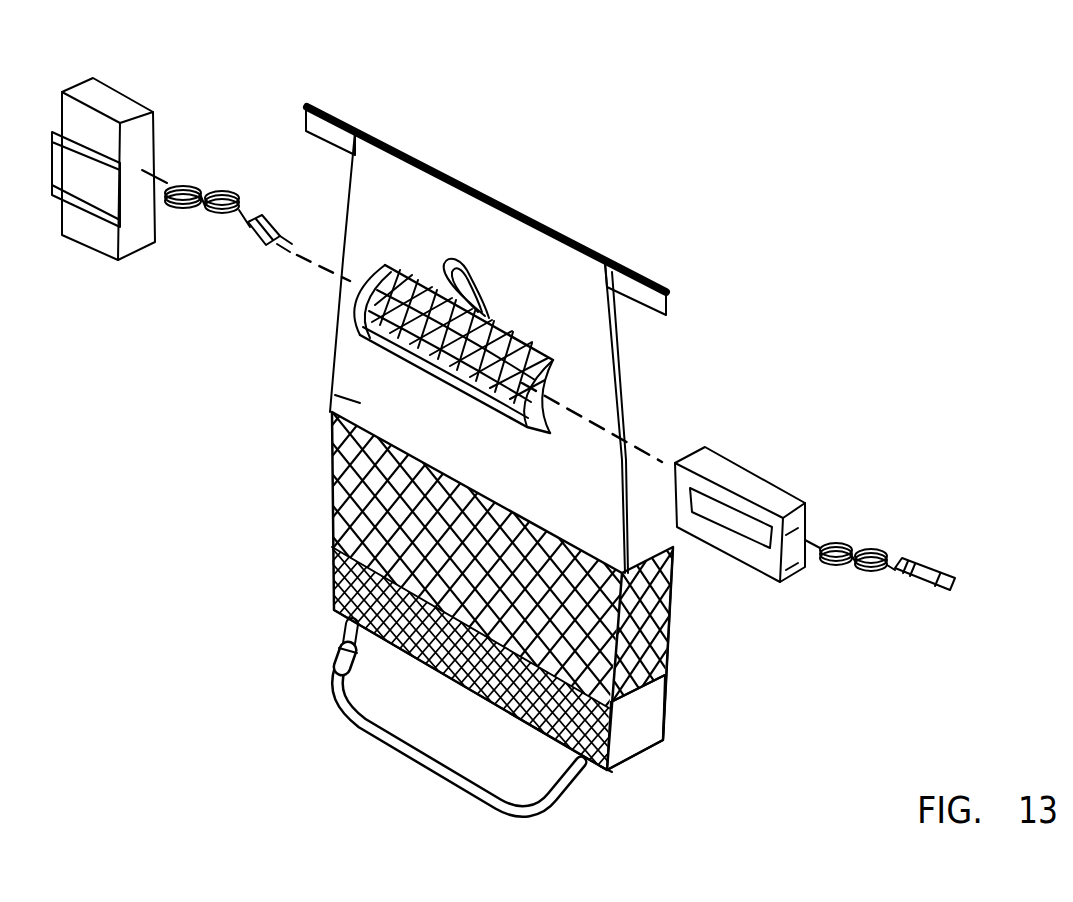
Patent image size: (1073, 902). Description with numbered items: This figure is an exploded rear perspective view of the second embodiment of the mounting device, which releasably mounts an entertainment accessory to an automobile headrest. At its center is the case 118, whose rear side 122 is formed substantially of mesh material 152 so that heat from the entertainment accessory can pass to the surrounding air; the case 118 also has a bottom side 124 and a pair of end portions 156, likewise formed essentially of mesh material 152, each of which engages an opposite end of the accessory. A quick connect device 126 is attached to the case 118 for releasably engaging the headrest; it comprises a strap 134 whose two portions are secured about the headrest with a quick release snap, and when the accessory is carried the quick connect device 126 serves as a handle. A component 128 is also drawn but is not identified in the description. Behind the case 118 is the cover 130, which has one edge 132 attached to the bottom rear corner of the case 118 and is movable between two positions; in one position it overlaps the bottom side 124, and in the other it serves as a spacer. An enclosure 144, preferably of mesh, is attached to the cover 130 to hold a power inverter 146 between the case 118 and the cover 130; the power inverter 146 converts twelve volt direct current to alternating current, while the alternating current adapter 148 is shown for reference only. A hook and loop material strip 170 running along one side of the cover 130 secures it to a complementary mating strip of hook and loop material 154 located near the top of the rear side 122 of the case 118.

The case 118 is at (674, 610).
The rear side 122 is at (330, 477).
The bottom side 124 is at (618, 767).
The quick connect device 126 is at (305, 811).
The handle connector 128 is at (337, 653).
The cover 130 is at (412, 190).
The edge 132 is at (360, 403).
The strap 134 is at (342, 718).
The enclosure 144 is at (505, 335).
The power inverter 146 is at (753, 477).
The alternating current adapter 148 is at (122, 92).
The mesh material 152 is at (353, 530).
The complementary mating strip of hook and loop material 154 is at (487, 703).
The end portions 156 is at (640, 723).
The hook and loop material strip 170 is at (307, 105).